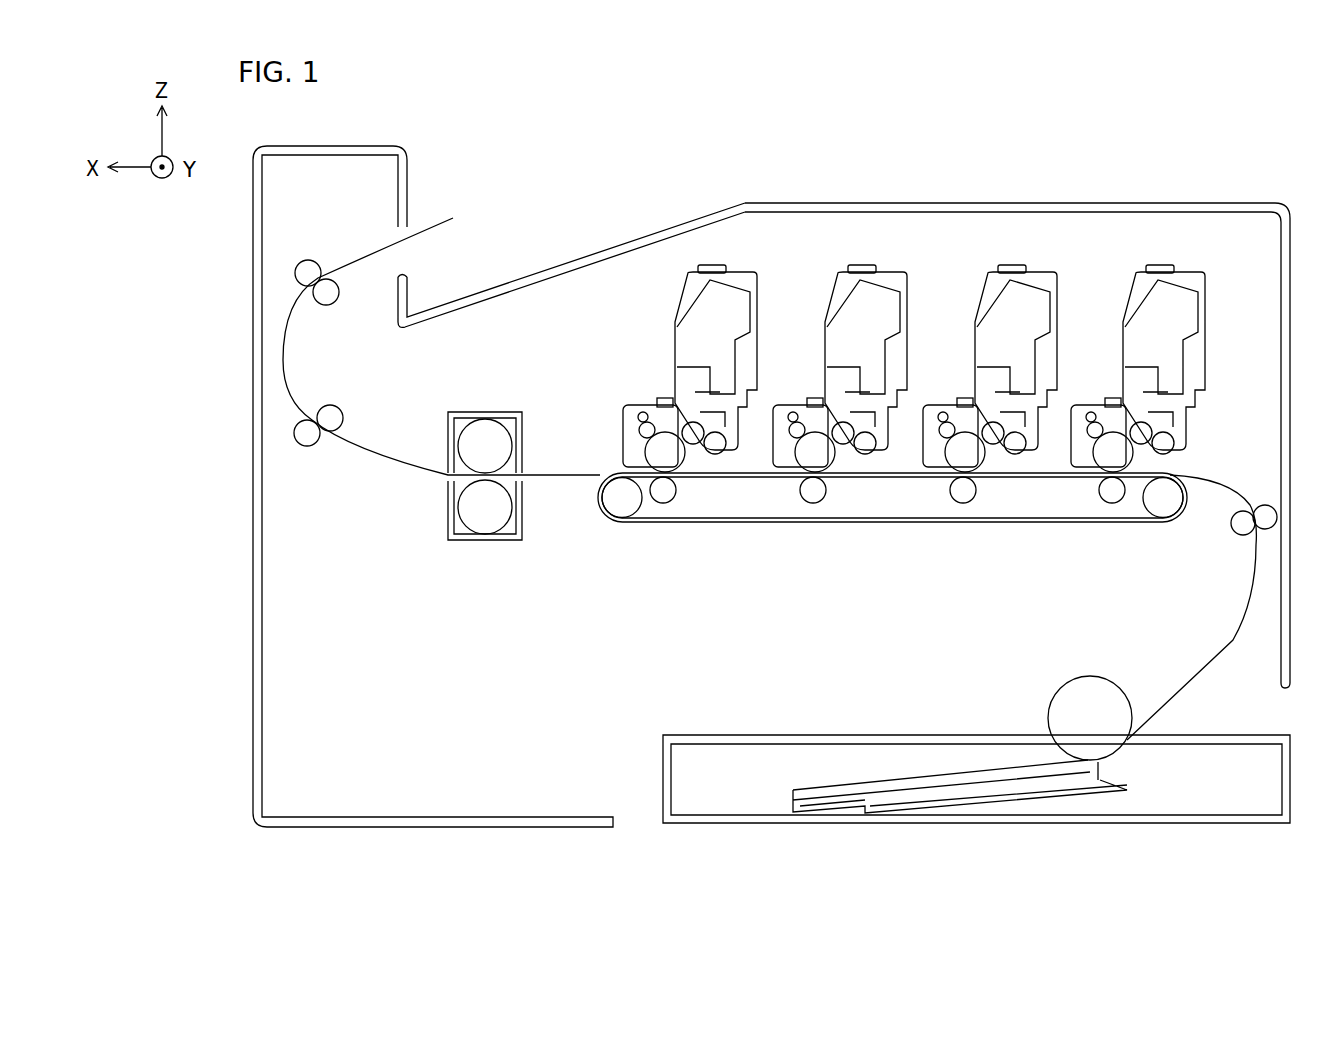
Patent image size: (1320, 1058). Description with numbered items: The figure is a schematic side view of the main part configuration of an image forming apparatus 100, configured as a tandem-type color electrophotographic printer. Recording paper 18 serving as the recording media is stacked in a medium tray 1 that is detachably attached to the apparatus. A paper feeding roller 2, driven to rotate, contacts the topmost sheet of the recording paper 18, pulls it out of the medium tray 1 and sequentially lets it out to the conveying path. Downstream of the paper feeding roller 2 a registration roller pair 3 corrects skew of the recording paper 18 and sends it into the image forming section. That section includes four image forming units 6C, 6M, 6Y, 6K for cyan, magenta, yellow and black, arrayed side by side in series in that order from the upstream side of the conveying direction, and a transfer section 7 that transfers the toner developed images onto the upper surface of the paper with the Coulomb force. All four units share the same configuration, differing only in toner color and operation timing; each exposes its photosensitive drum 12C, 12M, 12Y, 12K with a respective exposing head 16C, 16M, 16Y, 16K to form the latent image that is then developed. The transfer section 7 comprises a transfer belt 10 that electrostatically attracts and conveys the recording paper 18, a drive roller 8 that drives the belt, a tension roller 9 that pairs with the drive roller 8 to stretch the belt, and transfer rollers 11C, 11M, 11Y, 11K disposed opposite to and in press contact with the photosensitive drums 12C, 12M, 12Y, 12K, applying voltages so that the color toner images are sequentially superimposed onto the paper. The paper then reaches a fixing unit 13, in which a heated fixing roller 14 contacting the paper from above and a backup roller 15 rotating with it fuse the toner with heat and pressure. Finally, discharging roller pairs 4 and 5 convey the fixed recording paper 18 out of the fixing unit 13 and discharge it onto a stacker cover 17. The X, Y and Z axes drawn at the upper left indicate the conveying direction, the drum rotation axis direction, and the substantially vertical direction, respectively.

The image forming apparatus 100 is at (1120, 138).
The medium tray 1 is at (663, 778).
The paper feeding roller 2 is at (1072, 705).
The registration roller pair 3 is at (1268, 496).
The discharging roller pair 4 is at (328, 404).
The discharging roller pair 5 is at (332, 254).
The image forming unit for black 6K is at (748, 256).
The image forming unit for yellow 6Y is at (891, 256).
The image forming unit for magenta 6M is at (1051, 256).
The image forming unit for cyan 6C is at (1193, 256).
The transfer section 7 is at (776, 540).
The drive roller 8 is at (618, 508).
The tension roller 9 is at (1184, 512).
The transfer belt 10 is at (897, 523).
The transfer roller 11K is at (662, 500).
The transfer roller 11Y is at (818, 498).
The transfer roller 11M is at (964, 500).
The transfer roller 11C is at (1110, 500).
The photosensitive drum 12K is at (650, 456).
The photosensitive drum 12Y is at (800, 468).
The photosensitive drum 12M is at (950, 468).
The photosensitive drum 12C is at (1100, 468).
The fixing unit 13 is at (505, 404).
The fixing roller 14 is at (468, 448).
The backup roller 15 is at (466, 513).
The exposing head 16K is at (668, 386).
The exposing head 16Y is at (816, 386).
The exposing head 16M is at (964, 386).
The exposing head 16C is at (1114, 386).
The stacker cover 17 is at (594, 226).
The recording paper 18 is at (935, 775).